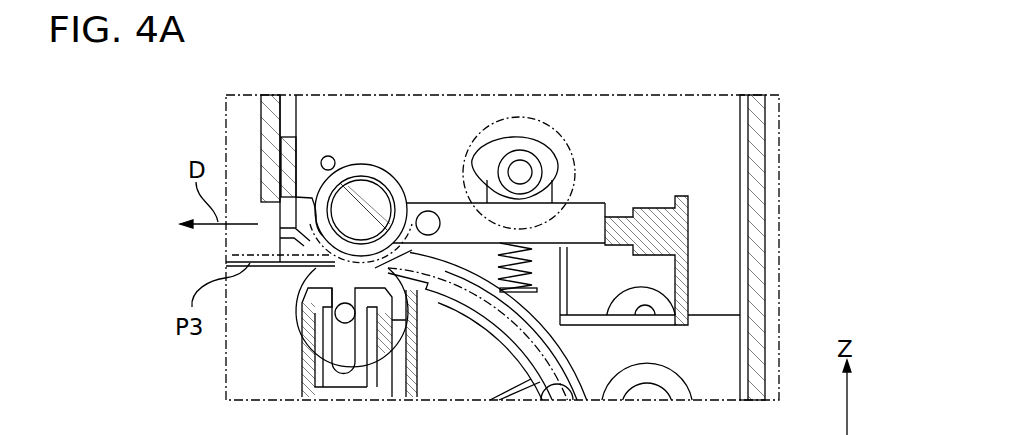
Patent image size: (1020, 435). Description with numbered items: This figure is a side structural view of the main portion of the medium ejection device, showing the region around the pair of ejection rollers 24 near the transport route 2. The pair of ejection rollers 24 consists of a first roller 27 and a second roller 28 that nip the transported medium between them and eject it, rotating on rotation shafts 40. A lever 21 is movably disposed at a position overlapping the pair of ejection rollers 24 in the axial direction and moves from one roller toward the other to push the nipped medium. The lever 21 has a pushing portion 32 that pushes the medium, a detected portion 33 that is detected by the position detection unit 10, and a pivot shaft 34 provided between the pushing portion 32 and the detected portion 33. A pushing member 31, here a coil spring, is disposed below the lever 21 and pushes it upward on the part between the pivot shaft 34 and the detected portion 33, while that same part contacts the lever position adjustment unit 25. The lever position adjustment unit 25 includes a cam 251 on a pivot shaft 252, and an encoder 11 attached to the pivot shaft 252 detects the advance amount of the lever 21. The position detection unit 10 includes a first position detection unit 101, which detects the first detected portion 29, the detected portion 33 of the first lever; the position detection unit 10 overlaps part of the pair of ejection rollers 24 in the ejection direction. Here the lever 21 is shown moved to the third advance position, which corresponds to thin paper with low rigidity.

The transport route 2 is at (453, 297).
The position detection unit 10 is at (513, 247).
The first position detection unit 101 is at (653, 213).
The encoder 11 is at (560, 122).
The lever 21 is at (290, 227).
The pair of ejection rollers 24 is at (374, 213).
The lever position adjustment unit 25 is at (481, 114).
The cam 251 is at (487, 158).
The pivot shaft 252 is at (520, 170).
The first roller 27 is at (360, 166).
The second roller 28 is at (303, 312).
The first detected portion 29 is at (646, 185).
The pushing member 31 is at (527, 265).
The pushing portion 32 is at (345, 267).
The detected portion 33 is at (622, 208).
The pivot shaft 34 is at (430, 211).
The rotation shafts 40 is at (358, 200).